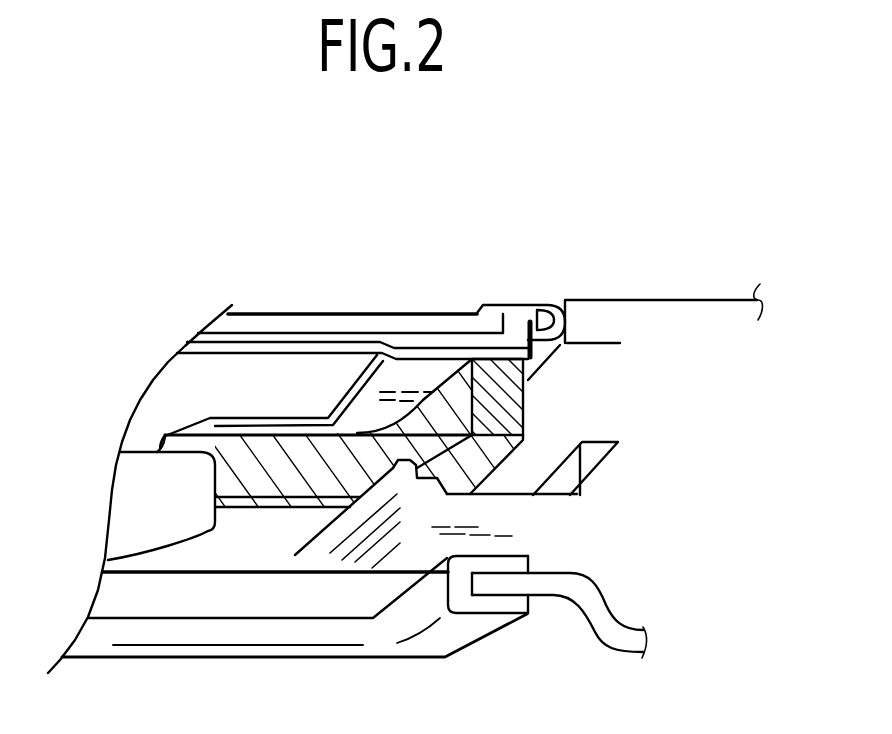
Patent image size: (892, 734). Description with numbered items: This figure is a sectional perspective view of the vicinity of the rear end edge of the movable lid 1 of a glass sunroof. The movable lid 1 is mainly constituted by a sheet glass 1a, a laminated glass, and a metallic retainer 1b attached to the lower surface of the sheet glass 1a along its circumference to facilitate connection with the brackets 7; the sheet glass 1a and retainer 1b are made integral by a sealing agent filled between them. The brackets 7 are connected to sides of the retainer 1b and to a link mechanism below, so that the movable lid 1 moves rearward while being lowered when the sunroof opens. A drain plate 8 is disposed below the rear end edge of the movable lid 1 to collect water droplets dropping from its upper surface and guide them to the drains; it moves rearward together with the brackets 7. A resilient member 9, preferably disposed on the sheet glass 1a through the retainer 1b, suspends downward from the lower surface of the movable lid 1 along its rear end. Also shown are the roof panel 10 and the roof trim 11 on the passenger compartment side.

The movable lid 1 is at (480, 213).
The sheet glass 1a is at (343, 325).
The retainer 1b is at (415, 372).
The bracket 7 is at (137, 490).
The drain plate 8 is at (523, 510).
The resilient member 9 is at (527, 390).
The roof panel 10 is at (663, 320).
The roof trim 11 is at (552, 602).